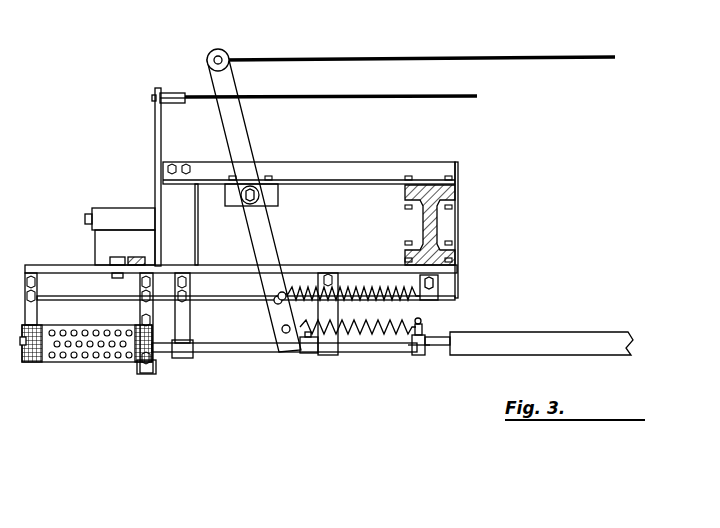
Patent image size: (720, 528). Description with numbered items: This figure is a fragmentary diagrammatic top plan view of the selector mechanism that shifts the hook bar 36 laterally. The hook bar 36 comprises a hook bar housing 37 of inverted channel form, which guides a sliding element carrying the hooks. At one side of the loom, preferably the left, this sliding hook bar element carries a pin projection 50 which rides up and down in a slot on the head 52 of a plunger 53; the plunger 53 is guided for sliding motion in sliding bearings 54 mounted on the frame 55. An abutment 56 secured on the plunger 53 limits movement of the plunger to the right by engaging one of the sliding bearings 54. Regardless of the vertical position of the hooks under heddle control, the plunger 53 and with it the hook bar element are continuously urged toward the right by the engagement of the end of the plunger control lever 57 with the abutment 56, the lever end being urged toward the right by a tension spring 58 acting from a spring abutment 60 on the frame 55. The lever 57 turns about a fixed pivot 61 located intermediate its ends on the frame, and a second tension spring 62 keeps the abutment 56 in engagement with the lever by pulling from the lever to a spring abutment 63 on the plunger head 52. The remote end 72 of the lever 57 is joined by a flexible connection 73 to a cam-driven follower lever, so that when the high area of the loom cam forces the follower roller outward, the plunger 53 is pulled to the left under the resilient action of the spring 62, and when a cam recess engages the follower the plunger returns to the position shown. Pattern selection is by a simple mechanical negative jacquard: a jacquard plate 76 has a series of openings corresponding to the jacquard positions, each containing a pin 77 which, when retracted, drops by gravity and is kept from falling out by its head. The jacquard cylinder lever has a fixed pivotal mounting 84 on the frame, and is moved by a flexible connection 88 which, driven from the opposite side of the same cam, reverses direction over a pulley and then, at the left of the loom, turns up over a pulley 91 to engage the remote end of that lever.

The hook bar 36 is at (580, 340).
The hook bar housing 37 is at (520, 340).
The pin projection 50 is at (438, 345).
The head 52 is at (420, 355).
The plunger 53 is at (393, 352).
The sliding bearings 54 is at (182, 358).
The frame 55 is at (232, 296).
The abutment 56 is at (307, 353).
The plunger control lever 57 is at (282, 352).
The tension spring 58 is at (380, 284).
The spring abutment 60 is at (438, 287).
The fixed pivot 61 is at (244, 204).
The tension spring 62 is at (372, 336).
The spring abutment 63 is at (422, 322).
The remote end 72 is at (220, 52).
The flexible connection 73 is at (455, 57).
The jacquard plate 76 is at (50, 362).
The pin 77 is at (88, 358).
The fixed pivotal mounting 84 is at (85, 218).
The flexible connection 88 is at (392, 99).
The pulley 91 is at (178, 103).